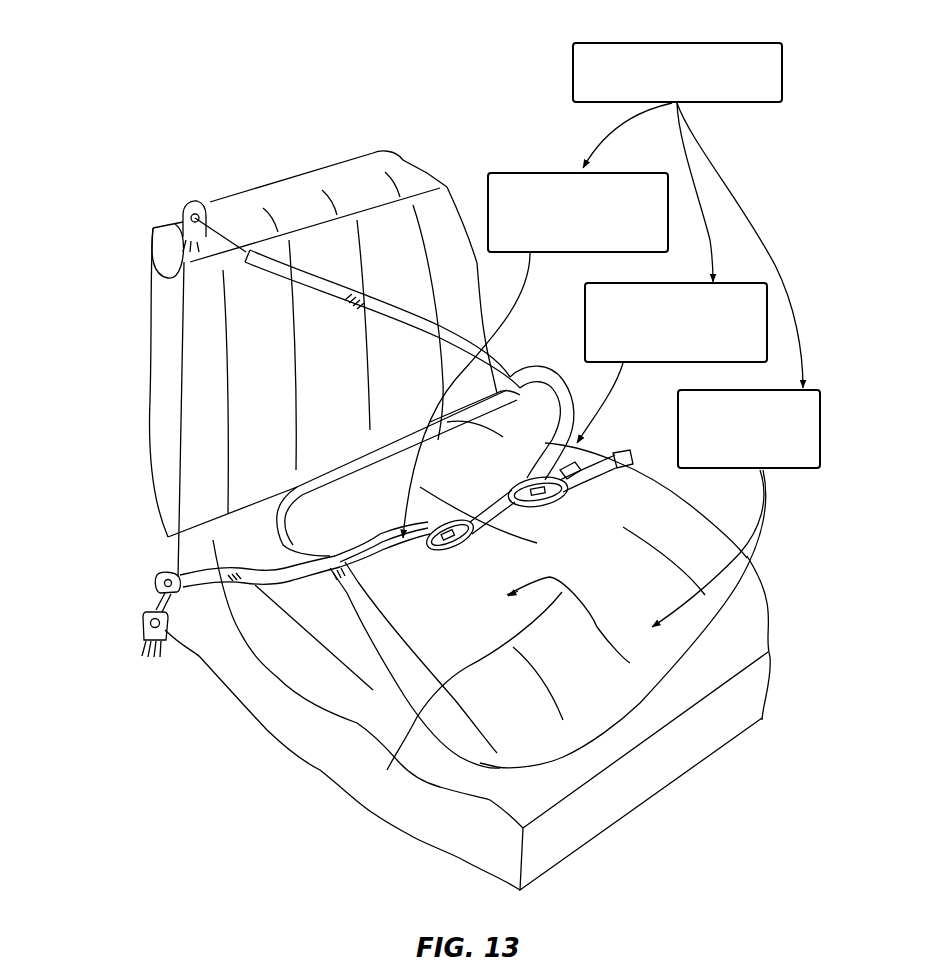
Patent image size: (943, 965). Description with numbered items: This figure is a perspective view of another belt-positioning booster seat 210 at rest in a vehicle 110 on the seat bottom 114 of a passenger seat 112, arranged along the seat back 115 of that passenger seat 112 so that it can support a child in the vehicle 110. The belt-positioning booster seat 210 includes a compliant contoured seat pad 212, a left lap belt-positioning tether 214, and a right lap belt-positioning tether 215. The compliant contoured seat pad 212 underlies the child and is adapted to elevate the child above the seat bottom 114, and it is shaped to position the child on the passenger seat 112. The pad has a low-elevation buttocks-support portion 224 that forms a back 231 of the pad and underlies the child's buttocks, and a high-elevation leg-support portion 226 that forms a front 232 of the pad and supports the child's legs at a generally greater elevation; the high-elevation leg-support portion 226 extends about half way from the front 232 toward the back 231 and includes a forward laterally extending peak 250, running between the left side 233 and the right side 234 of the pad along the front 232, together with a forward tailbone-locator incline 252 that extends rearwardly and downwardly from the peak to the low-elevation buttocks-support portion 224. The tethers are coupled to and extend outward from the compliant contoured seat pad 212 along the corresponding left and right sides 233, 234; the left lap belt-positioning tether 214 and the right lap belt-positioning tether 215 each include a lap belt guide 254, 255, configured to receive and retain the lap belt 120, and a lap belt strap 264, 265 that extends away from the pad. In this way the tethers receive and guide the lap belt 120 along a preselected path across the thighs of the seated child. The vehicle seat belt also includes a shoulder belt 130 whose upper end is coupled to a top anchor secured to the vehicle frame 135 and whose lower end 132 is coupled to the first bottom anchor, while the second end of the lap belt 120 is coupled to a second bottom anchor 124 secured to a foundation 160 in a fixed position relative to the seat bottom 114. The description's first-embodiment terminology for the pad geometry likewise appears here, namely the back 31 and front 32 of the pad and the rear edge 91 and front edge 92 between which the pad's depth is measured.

The vehicle 110 is at (125, 178).
The passenger seat 112 is at (143, 285).
The seat bottom 114 is at (158, 363).
The seat back 115 is at (290, 737).
The lap belt 120 is at (257, 587).
The second bottom anchor 124 is at (133, 613).
The shoulder belt 130 is at (392, 312).
The lower end of shoulder belt 132 is at (180, 197).
The vehicle frame 135 is at (153, 273).
The foundation 160 is at (152, 655).
The belt-positioning booster seat 210 is at (655, 43).
The compliant contoured seat pad 212 is at (780, 390).
The left lap belt-positioning tether 214 is at (525, 173).
The right lap belt-positioning tether 215 is at (637, 282).
The low-elevation buttocks-support portion 224 is at (369, 490).
The high-elevation leg-support portion 226 is at (420, 703).
The back of compliant contoured seat pad 231 is at (633, 723).
The front of compliant contoured seat pad 232 is at (330, 466).
The left side of compliant contoured seat pad 233 is at (375, 640).
The right side of compliant contoured seat pad 234 is at (692, 513).
The forward laterally extending peak 250 is at (688, 526).
The forward tailbone-locator incline 252 is at (613, 500).
The lap belt guide 254 is at (443, 508).
The lap belt guide 255 is at (503, 477).
The lap belt strap 264 is at (400, 569).
The lap belt strap 265 is at (570, 480).
The back of compliant contoured seat pad 31 is at (394, 441).
The front of compliant contoured seat pad 32 is at (672, 692).
The rear edge 91 is at (295, 487).
The front edge 92 is at (698, 663).